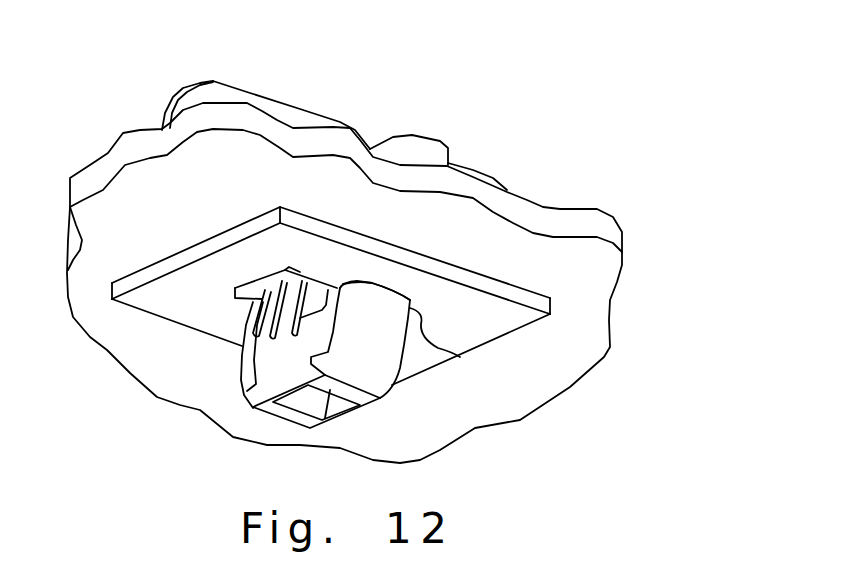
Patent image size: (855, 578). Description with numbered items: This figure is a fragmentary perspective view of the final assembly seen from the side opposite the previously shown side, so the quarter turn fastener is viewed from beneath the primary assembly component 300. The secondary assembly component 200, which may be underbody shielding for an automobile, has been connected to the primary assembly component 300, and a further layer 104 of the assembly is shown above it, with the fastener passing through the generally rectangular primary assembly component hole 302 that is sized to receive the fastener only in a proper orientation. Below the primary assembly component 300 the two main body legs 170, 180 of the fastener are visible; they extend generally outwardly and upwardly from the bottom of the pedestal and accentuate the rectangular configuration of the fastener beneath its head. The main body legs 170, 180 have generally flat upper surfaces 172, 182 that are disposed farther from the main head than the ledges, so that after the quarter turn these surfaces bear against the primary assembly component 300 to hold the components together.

The cover panel 104 is at (297, 113).
The secondary assembly component 200 is at (593, 217).
The primary assembly component 300 is at (540, 292).
The primary assembly component hole 302 is at (460, 357).
The main body leg 180 is at (377, 347).
The flat upper surface 182 is at (382, 285).
The main body leg 170 is at (247, 360).
The flat upper surface 172 is at (260, 307).